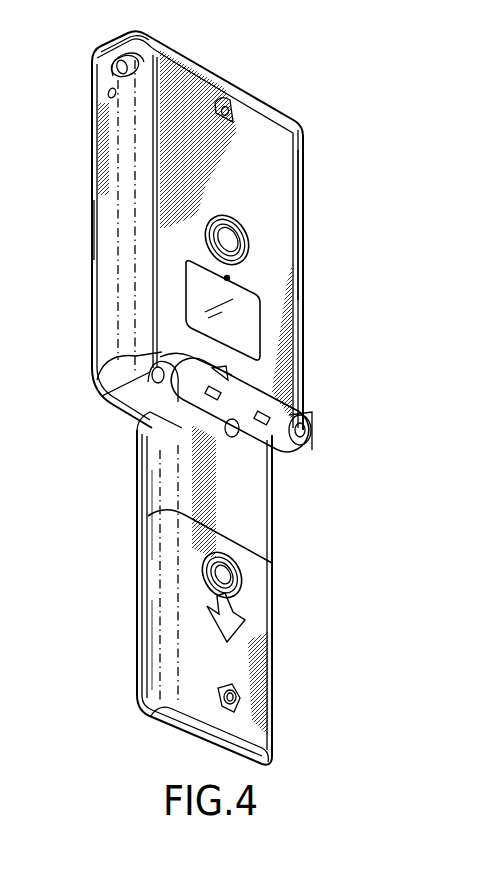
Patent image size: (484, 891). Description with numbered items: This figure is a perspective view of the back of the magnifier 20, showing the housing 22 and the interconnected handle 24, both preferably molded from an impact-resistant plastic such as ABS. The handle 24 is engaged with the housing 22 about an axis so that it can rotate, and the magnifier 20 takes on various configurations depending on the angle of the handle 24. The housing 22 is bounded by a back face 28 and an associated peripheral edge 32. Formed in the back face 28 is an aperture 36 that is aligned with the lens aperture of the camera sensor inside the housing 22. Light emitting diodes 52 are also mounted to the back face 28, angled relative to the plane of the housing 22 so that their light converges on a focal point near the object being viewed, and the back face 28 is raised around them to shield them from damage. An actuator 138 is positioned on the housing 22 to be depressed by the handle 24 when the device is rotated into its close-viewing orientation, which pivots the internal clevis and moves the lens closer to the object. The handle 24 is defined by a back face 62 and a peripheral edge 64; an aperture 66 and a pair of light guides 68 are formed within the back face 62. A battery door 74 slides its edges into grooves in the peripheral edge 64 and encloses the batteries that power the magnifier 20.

The magnifier 20 is at (313, 0).
The housing 22 is at (293, 356).
The handle 24 is at (276, 531).
The back face 28 is at (285, 168).
The peripheral edge 32 is at (110, 232).
The aperture 36 is at (238, 233).
The light emitting diodes 52 is at (262, 388).
The back face 62 is at (252, 632).
The peripheral edge 64 is at (157, 553).
The aperture 66 is at (252, 582).
The light guides 68 is at (270, 450).
The battery door 74 is at (167, 652).
The actuator 138 is at (229, 279).